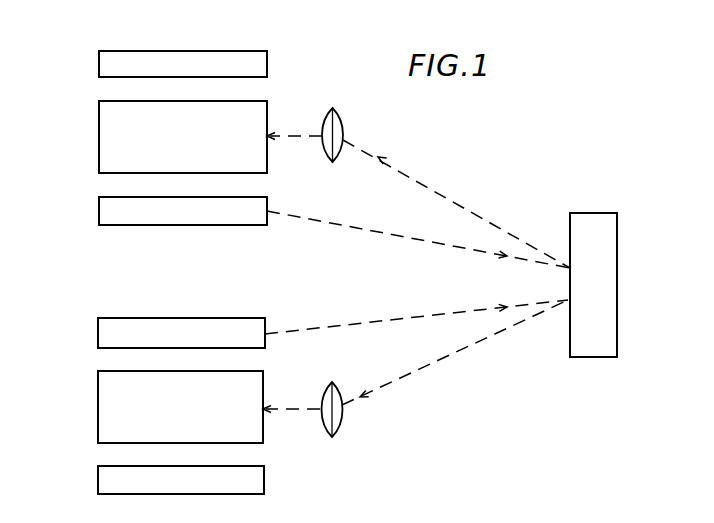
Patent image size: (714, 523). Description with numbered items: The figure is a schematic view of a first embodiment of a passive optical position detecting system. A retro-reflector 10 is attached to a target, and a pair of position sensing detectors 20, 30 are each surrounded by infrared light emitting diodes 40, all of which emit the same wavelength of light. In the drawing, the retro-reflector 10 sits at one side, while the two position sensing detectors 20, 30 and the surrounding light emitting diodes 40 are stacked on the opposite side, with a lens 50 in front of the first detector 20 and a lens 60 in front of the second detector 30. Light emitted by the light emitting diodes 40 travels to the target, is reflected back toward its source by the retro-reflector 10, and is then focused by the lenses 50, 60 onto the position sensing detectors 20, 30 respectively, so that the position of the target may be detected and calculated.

The retro-reflector 10 is at (617, 270).
The position sensing detector 20 is at (97, 143).
The position sensing detector 30 is at (97, 403).
The infrared light emitting diodes 40 is at (204, 50).
The lens 50 is at (377, 90).
The lens 60 is at (338, 383).